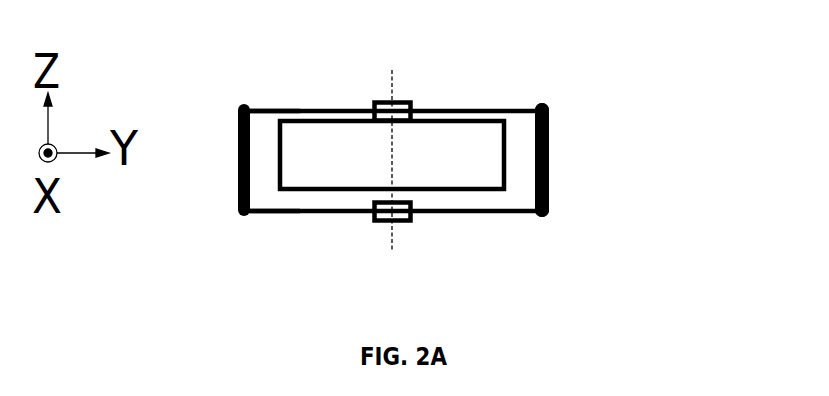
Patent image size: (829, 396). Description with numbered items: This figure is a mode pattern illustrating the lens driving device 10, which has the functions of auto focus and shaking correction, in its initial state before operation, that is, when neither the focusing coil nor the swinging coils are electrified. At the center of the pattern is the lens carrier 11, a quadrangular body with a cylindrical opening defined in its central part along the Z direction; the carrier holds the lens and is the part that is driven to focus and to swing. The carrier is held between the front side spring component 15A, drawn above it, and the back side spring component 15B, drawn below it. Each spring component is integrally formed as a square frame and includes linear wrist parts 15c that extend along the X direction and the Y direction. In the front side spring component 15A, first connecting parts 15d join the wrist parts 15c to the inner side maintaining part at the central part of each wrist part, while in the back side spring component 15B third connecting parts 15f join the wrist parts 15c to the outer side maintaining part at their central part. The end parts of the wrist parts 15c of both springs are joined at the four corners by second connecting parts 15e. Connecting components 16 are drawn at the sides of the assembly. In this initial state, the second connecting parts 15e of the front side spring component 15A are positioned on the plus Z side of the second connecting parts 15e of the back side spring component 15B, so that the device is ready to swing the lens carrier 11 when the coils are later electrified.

The lens driving device 10 is at (749, 107).
The lens carrier 11 is at (452, 175).
The front side spring component 15A is at (480, 108).
The back side spring component 15B is at (442, 213).
The wrist parts 15c is at (287, 108).
The first connecting parts 15d is at (372, 103).
The second connecting parts 15e is at (539, 106).
The third connecting parts 15f is at (378, 221).
The connecting components 16 is at (551, 152).